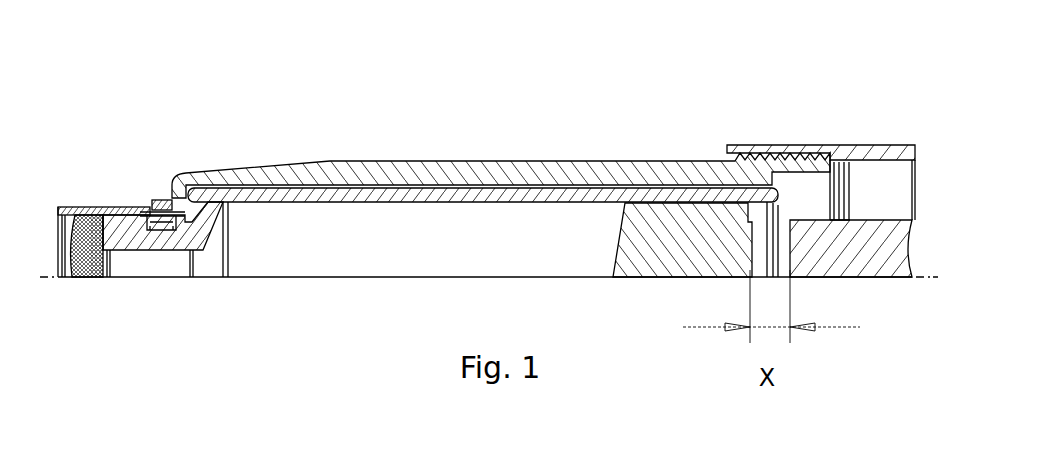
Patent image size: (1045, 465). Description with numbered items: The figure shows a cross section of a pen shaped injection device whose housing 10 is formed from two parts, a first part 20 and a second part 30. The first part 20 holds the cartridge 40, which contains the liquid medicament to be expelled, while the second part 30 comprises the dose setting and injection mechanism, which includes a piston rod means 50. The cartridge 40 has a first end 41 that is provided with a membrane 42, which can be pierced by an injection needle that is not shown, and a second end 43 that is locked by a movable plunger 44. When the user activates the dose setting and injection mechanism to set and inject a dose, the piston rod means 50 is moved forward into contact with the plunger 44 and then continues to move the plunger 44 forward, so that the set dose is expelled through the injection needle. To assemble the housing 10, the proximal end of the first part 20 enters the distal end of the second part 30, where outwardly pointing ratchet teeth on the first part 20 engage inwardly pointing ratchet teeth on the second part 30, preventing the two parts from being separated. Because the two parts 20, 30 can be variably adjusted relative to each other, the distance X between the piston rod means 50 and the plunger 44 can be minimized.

The housing 10 is at (718, 105).
The first part 20 is at (583, 167).
The second part 30 is at (899, 153).
The cartridge 40 is at (296, 192).
The first end 41 is at (105, 228).
The membrane 42 is at (79, 260).
The second end 43 is at (777, 203).
The plunger 44 is at (680, 253).
The piston rod means 50 is at (862, 253).